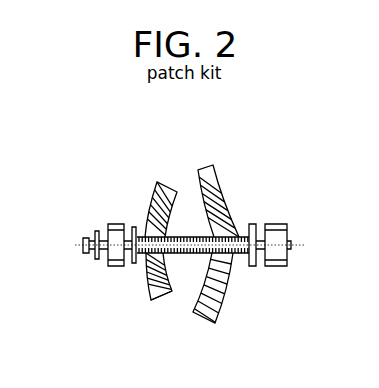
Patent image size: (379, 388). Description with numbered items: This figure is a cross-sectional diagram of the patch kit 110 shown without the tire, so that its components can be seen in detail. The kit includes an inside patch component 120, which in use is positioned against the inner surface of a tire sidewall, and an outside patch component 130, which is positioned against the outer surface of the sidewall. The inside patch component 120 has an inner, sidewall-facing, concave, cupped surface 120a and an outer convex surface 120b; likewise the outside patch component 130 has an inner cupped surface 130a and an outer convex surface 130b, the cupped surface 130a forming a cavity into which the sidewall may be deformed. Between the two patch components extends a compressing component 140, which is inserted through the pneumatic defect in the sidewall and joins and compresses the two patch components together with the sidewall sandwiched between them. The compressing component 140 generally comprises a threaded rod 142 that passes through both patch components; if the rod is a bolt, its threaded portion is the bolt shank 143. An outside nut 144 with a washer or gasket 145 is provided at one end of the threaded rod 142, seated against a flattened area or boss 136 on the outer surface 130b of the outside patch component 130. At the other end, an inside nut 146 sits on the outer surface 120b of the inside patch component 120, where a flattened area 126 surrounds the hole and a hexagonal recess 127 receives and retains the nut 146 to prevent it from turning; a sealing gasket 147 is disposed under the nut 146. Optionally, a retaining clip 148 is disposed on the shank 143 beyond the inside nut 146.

The patch kit 110 is at (166, 146).
The inside patch component 120 is at (145, 190).
The inner cupped surface of inside patch component 120a is at (175, 191).
The outer convex surface of inside patch component 120b is at (150, 299).
The flattened area 126 is at (136, 226).
The recess 127 is at (137, 267).
The outside patch component 130 is at (211, 158).
The inner cupped surface of outside patch component 130a is at (190, 257).
The outer convex surface of outside patch component 130b is at (216, 317).
The flattened area or boss 136 is at (246, 256).
The compressing component 140 is at (249, 205).
The threaded rod 142 is at (172, 294).
The bolt shank 143 is at (259, 262).
The outside nut 144 is at (285, 229).
The washer or gasket 145 is at (253, 223).
The inside nut 146 is at (108, 224).
The sealing gasket 147 is at (133, 264).
The retaining clip 148 is at (97, 260).